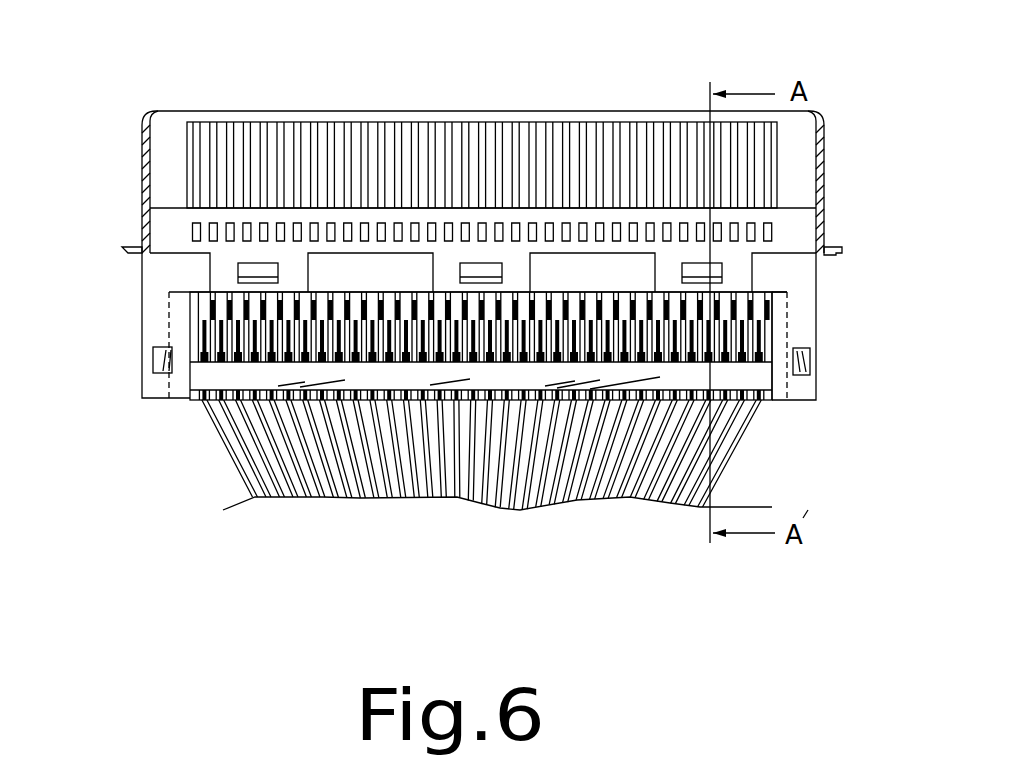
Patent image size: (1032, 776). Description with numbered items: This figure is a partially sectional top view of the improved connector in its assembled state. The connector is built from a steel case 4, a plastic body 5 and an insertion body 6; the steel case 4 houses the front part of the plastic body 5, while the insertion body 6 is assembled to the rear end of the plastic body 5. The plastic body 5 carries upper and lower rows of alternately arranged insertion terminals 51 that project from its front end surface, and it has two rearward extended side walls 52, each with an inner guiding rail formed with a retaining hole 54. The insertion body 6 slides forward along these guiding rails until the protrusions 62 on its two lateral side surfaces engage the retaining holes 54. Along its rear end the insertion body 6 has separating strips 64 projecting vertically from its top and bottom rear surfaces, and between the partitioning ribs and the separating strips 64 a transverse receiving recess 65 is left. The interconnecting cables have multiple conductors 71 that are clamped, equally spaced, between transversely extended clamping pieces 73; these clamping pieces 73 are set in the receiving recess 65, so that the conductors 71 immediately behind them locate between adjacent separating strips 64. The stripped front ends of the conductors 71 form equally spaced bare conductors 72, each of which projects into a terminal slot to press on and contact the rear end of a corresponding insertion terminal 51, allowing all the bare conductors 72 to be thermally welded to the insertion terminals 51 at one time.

The steel case 4 is at (822, 148).
The plastic body 5 is at (800, 230).
The insertion terminals 51 is at (355, 133).
The side walls 52 is at (820, 303).
The retaining hole 54 is at (810, 377).
The insertion body 6 is at (787, 402).
The protrusions 62 is at (797, 362).
The separating strips 64 is at (193, 397).
The receiving recess 65 is at (192, 373).
The conductors 71 is at (202, 353).
The bare conductors 72 is at (200, 323).
The clamping pieces 73 is at (202, 380).